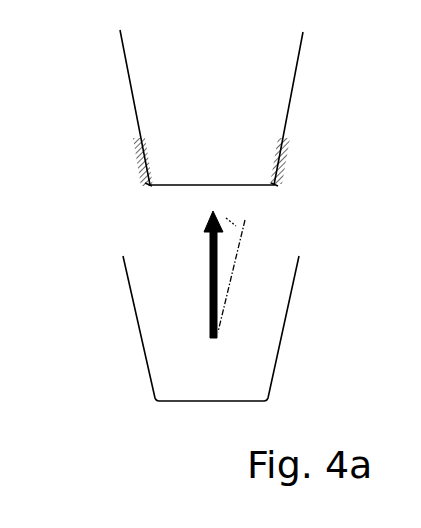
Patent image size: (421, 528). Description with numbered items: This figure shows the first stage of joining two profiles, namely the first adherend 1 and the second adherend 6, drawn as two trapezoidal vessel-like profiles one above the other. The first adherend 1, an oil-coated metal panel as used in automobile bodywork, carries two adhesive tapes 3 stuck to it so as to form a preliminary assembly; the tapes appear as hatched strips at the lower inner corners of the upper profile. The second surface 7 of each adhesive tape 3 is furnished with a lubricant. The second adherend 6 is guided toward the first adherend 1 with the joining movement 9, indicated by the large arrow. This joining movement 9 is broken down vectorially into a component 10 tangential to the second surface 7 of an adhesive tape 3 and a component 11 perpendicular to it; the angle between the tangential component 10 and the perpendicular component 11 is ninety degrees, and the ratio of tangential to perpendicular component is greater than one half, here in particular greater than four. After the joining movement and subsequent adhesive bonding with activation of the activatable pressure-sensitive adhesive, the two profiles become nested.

The first adherend 1 is at (122, 51).
The adhesive tape 3 is at (136, 152).
The second surface 7 is at (141, 178).
The joining movement 9 is at (204, 244).
The perpendicular component 11 is at (220, 215).
The tangential component 10 is at (240, 255).
The second adherend 6 is at (273, 382).